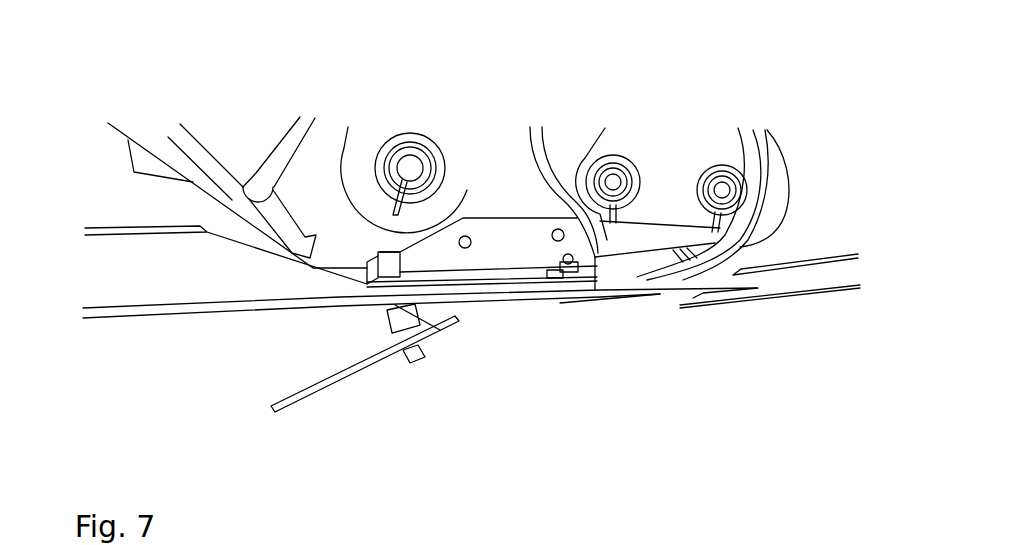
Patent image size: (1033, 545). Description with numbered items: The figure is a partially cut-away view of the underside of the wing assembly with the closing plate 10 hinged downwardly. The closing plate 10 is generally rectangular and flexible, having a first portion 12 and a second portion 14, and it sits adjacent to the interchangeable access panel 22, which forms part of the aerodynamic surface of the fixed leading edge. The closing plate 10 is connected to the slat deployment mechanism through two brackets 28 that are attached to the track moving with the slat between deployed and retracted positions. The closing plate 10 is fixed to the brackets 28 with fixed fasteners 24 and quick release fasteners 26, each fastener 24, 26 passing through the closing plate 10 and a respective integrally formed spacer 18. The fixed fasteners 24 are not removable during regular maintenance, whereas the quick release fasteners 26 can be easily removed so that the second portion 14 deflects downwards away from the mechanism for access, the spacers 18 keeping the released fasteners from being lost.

The closing plate 10 is at (255, 390).
The first portion 12 is at (298, 403).
The second portion 14 is at (637, 302).
The integrally formed spacer 18 is at (390, 328).
The interchangeable access panel 22 is at (120, 272).
The fixed fastener 24 is at (560, 268).
The quick release fastener 26 is at (420, 345).
The bracket 28 is at (507, 243).